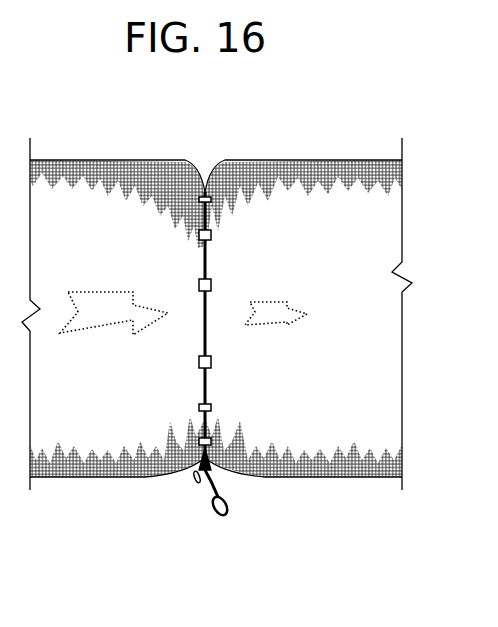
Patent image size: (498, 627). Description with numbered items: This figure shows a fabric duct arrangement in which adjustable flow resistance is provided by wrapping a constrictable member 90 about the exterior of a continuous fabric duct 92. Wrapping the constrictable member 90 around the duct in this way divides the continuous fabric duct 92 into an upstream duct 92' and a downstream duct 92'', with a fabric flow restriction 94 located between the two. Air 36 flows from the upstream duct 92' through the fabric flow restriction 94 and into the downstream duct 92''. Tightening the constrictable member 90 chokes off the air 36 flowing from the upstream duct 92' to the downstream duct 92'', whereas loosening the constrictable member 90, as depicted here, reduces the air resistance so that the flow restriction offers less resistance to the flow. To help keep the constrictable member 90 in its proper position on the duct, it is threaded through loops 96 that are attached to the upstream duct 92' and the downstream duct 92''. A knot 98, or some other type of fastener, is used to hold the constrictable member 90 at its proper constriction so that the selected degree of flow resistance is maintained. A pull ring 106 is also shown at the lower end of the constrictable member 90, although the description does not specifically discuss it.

The continuous fabric duct 92 is at (113, 289).
The upstream duct 92' is at (118, 124).
The downstream duct 92'' is at (308, 288).
The fabric flow restriction 94 is at (216, 145).
The constrictable member 90 is at (208, 262).
The loops 96 is at (198, 362).
The knot 98 is at (196, 483).
The pull ring 106 is at (222, 514).
The air 36 is at (100, 325).